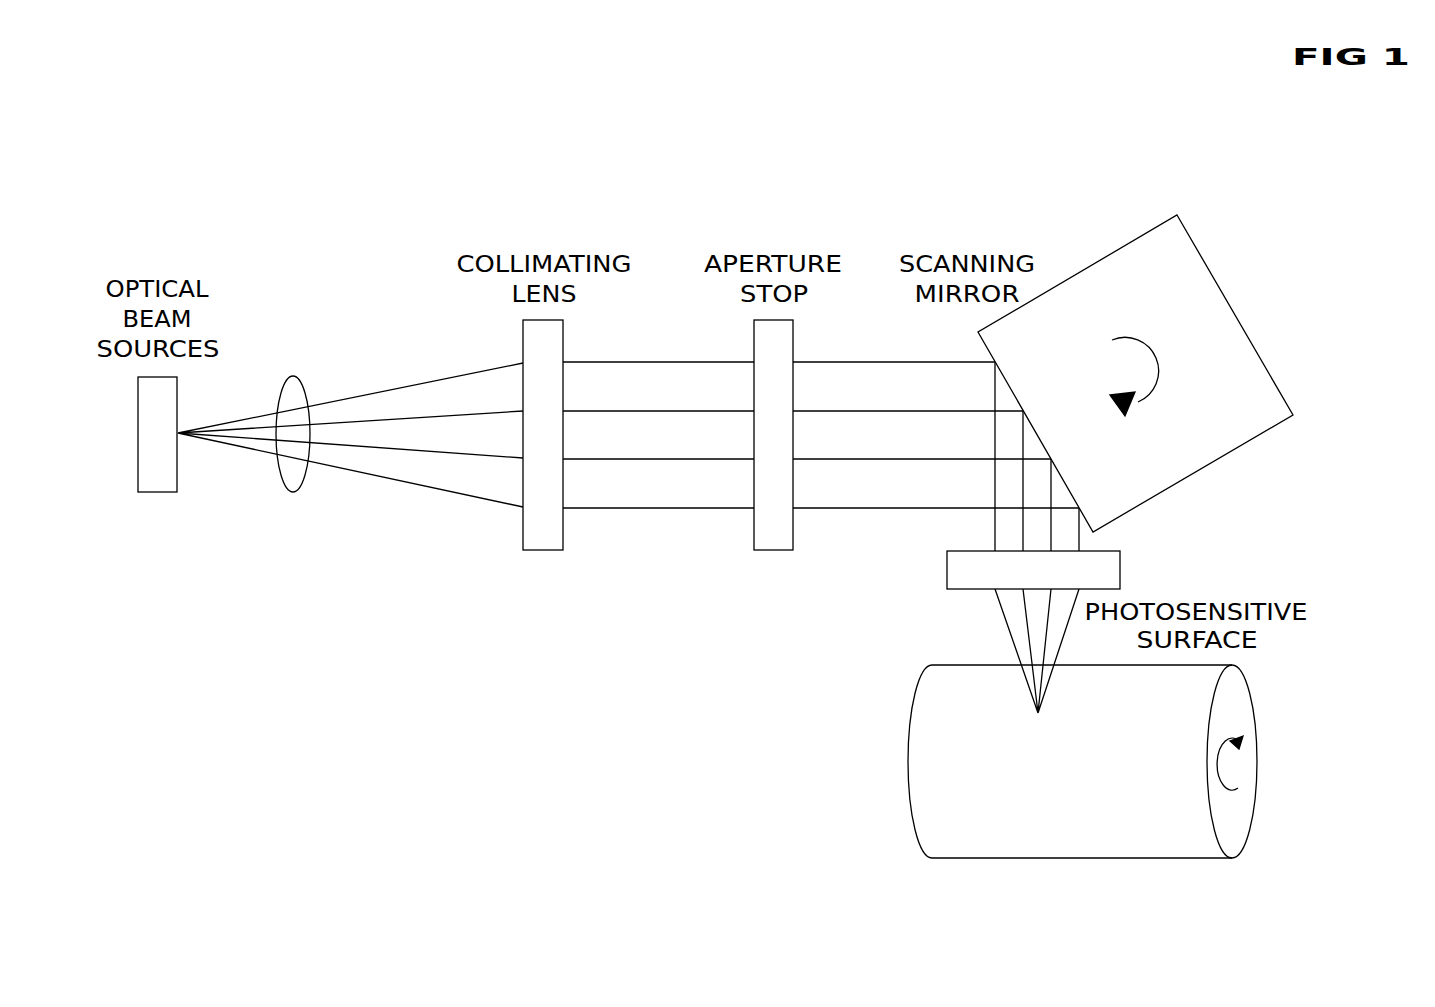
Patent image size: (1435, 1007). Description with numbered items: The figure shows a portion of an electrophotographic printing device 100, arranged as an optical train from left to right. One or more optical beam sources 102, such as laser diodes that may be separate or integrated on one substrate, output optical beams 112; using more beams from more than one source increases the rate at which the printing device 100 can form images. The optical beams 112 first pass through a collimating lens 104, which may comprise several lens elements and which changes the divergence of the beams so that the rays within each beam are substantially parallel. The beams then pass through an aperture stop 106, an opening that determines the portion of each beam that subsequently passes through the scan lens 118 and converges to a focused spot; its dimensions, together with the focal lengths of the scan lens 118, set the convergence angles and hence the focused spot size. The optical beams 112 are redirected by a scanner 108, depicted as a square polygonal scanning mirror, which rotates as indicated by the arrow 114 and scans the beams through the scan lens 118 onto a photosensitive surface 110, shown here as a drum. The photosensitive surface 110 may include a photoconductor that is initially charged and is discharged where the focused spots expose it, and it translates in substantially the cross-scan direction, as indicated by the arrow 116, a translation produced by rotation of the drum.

The printing device 100 is at (394, 688).
The optical beam sources 102 is at (153, 492).
The collimating lens 104 is at (535, 550).
The aperture stop 106 is at (765, 550).
The scanner 108 is at (1097, 262).
The photosensitive surface 110 is at (950, 665).
The optical beams 112 is at (293, 492).
The arrow 114 is at (1138, 402).
The arrow 116 is at (1218, 767).
The scan lens 118 is at (1120, 563).